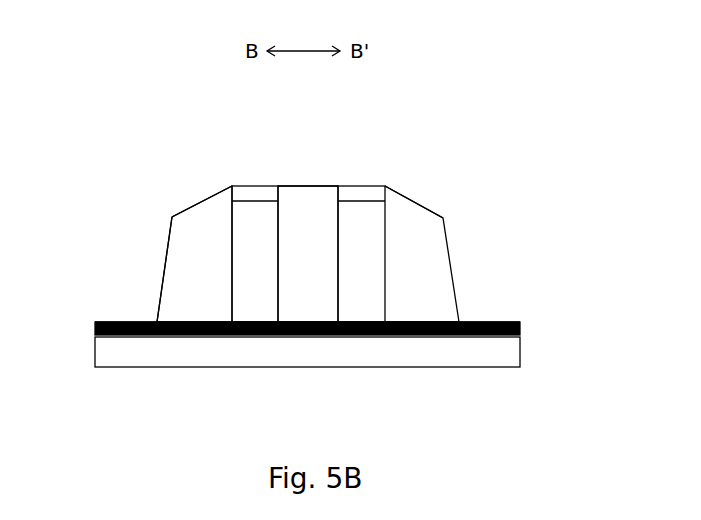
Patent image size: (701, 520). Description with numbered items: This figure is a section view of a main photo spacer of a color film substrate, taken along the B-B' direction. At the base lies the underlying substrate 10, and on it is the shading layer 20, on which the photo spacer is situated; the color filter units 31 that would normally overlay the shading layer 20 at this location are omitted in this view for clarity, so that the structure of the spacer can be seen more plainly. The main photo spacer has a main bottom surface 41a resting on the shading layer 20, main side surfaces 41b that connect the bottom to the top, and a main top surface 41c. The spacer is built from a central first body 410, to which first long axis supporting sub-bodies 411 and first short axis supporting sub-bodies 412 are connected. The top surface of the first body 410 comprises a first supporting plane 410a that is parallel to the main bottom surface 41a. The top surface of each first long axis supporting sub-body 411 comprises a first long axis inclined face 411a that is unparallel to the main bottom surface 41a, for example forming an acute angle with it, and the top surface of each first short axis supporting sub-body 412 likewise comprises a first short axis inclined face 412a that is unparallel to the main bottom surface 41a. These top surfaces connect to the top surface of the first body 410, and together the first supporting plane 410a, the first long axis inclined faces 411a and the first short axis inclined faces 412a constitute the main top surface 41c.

The underlying substrate 10 is at (505, 351).
The shading layer 20 is at (520, 330).
The color filter unit 31 is at (340, 308).
The main bottom surface 41a is at (365, 335).
The main side surface 41b is at (165, 303).
The main top surface 41c is at (463, 133).
The first body 410 is at (303, 288).
The first supporting plane 410a is at (307, 186).
The first long axis supporting sub-body 411 is at (247, 287).
The first long axis inclined face 411a is at (197, 204).
The first short axis supporting sub-body 412 is at (188, 290).
The first short axis inclined face 412a is at (255, 192).